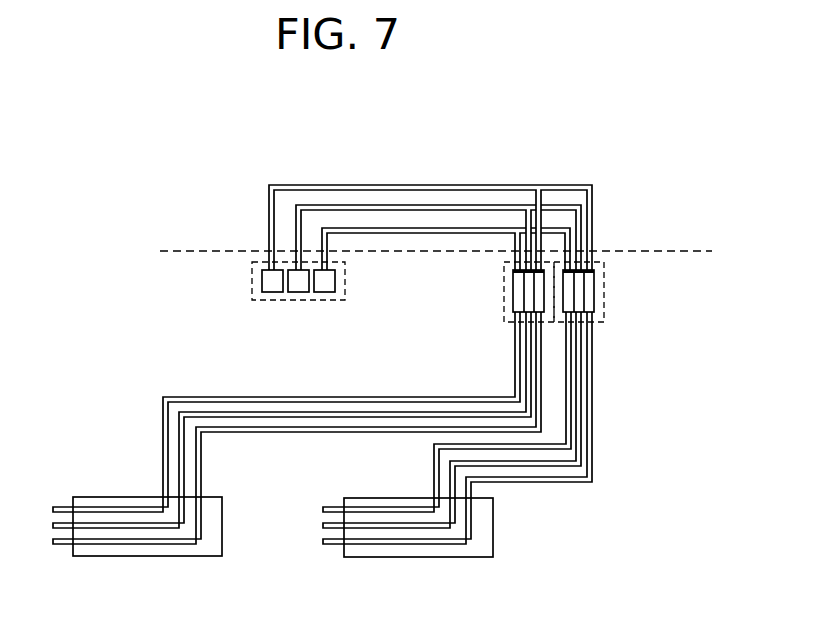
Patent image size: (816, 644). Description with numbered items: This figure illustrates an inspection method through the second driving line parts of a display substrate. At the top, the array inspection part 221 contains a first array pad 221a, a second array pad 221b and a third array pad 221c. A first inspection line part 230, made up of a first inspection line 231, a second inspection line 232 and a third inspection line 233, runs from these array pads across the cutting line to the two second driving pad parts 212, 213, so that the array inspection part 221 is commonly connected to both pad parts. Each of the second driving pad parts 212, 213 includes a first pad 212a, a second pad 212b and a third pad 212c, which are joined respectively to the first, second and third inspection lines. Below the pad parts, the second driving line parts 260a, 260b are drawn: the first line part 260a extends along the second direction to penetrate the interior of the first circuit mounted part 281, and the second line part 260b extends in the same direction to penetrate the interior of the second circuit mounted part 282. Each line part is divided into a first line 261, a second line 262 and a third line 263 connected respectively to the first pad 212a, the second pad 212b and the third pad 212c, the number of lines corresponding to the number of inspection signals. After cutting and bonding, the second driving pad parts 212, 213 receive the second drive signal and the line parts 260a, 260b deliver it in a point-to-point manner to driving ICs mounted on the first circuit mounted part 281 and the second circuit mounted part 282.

The first inspection line part 230 is at (479, 142).
The first inspection line 231 is at (456, 184).
The second inspection line 232 is at (415, 204).
The third inspection line 233 is at (373, 227).
The array inspection part 221 is at (315, 302).
The first array pad 221a is at (272, 292).
The second array pad 221b is at (298, 292).
The third array pad 221c is at (325, 292).
The second driving pad part 212 is at (597, 325).
The second driving pad part 213 is at (512, 325).
The first pad 212a is at (530, 275).
The second pad 212b is at (530, 295).
The third pad 212c is at (515, 305).
The first line part 260a is at (647, 392).
The second line part 260b is at (97, 392).
The first line 261 is at (198, 450).
The second line 262 is at (182, 427).
The third line 263 is at (163, 402).
The first circuit mounted part 281 is at (403, 558).
The second circuit mounted part 282 is at (148, 557).